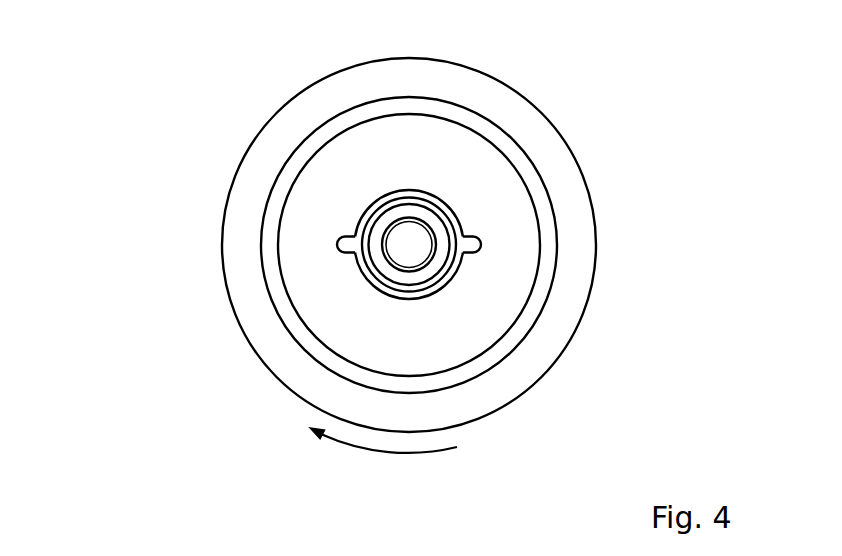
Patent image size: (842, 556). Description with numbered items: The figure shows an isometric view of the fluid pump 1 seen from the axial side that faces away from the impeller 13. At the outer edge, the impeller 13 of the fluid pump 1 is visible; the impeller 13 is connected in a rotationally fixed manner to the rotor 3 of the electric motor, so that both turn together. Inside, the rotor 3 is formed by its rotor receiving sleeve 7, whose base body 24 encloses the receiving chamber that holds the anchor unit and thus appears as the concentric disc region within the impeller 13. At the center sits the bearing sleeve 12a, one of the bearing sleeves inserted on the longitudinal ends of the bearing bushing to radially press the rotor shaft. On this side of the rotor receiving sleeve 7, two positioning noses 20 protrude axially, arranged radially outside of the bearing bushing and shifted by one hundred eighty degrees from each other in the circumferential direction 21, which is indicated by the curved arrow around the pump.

The fluid pump 1 is at (227, 106).
The rotor 3 is at (574, 276).
The rotor receiving sleeve 7 is at (571, 251).
The bearing sleeve 12a is at (408, 210).
The impeller 13 is at (600, 185).
The positioning noses 20 is at (345, 238).
The circumferential direction 21 is at (387, 450).
The base body 24 is at (528, 310).